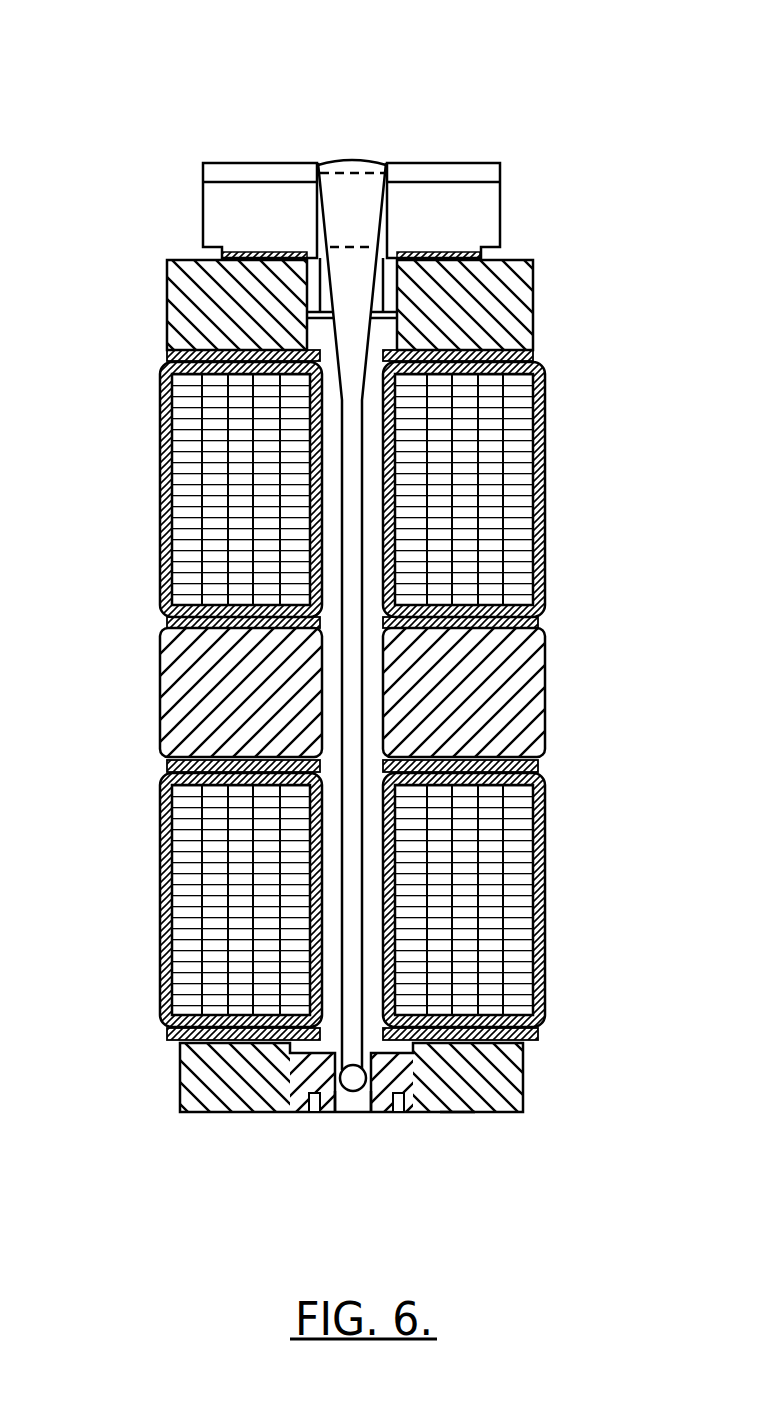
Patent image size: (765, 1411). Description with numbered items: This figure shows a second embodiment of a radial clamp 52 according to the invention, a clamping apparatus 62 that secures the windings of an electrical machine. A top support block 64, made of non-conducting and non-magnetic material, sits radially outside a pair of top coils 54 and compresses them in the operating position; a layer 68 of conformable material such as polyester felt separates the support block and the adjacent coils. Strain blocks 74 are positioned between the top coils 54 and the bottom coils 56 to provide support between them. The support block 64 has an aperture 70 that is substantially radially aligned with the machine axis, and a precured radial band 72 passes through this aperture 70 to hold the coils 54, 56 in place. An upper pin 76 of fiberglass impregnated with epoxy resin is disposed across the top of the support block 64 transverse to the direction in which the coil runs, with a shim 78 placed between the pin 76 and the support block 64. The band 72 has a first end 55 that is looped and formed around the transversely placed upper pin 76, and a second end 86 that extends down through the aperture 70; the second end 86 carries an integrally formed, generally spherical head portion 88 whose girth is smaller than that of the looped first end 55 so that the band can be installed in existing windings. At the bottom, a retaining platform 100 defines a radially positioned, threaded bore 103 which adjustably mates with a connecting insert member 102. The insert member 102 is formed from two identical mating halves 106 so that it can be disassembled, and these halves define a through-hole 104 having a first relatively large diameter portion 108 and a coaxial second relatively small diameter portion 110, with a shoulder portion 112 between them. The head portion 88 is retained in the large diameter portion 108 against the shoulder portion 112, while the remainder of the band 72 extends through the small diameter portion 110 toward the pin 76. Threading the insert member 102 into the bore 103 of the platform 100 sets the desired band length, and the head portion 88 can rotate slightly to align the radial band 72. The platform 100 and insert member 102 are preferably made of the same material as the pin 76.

The solenoid valve assembly 52 is at (343, 140).
The first end 55 is at (352, 193).
The clamping apparatus 62 is at (360, 164).
The upper pin 76 is at (217, 212).
The shim 78 is at (483, 253).
The top support block 64 is at (161, 320).
The aperture 70 is at (378, 298).
The layer of conformable material 68 is at (165, 353).
The precured radial band 72 is at (354, 428).
The top coils 54 is at (157, 477).
The strain blocks 74 is at (586, 698).
The bottom coils 56 is at (157, 918).
The second end 86 is at (358, 1055).
The head portion 88 is at (515, 1008).
The retaining platform 100 is at (487, 1073).
The connecting insert member 102 is at (457, 1113).
The bore 103 is at (180, 1060).
The through-hole 104 is at (368, 1112).
The mating halves 106 is at (387, 1113).
The first relatively large diameter portion 108 is at (347, 1112).
The second relatively small diameter portion 110 is at (180, 1102).
The shoulder portion 112 is at (337, 1112).